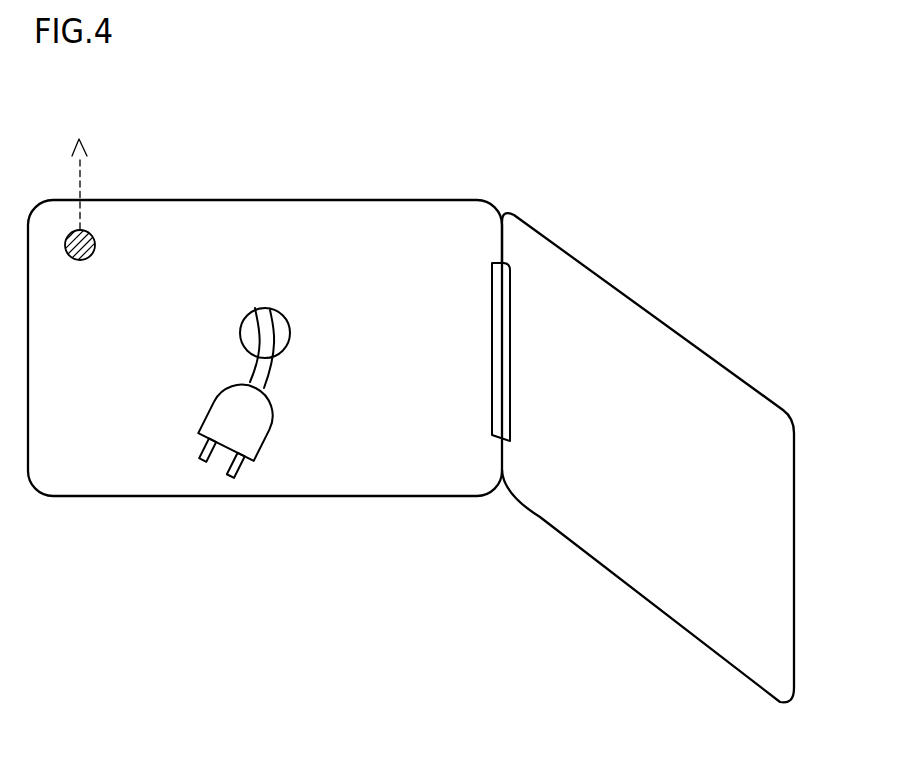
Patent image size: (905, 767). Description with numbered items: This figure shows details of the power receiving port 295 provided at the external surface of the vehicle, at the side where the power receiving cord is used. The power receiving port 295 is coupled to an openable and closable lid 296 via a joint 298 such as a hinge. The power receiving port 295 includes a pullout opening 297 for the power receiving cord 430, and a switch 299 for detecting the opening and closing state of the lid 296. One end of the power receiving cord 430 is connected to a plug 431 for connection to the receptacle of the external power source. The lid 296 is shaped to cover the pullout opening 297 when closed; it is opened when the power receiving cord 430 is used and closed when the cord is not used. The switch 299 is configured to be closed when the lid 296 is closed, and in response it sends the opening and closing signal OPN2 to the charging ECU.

The power receiving port 295 is at (125, 470).
The lid 296 is at (627, 292).
The pullout opening 297 is at (290, 320).
The joint 298 is at (510, 292).
The switch 299 is at (90, 260).
The power receiving cord 430 is at (273, 368).
The plug 431 is at (266, 440).